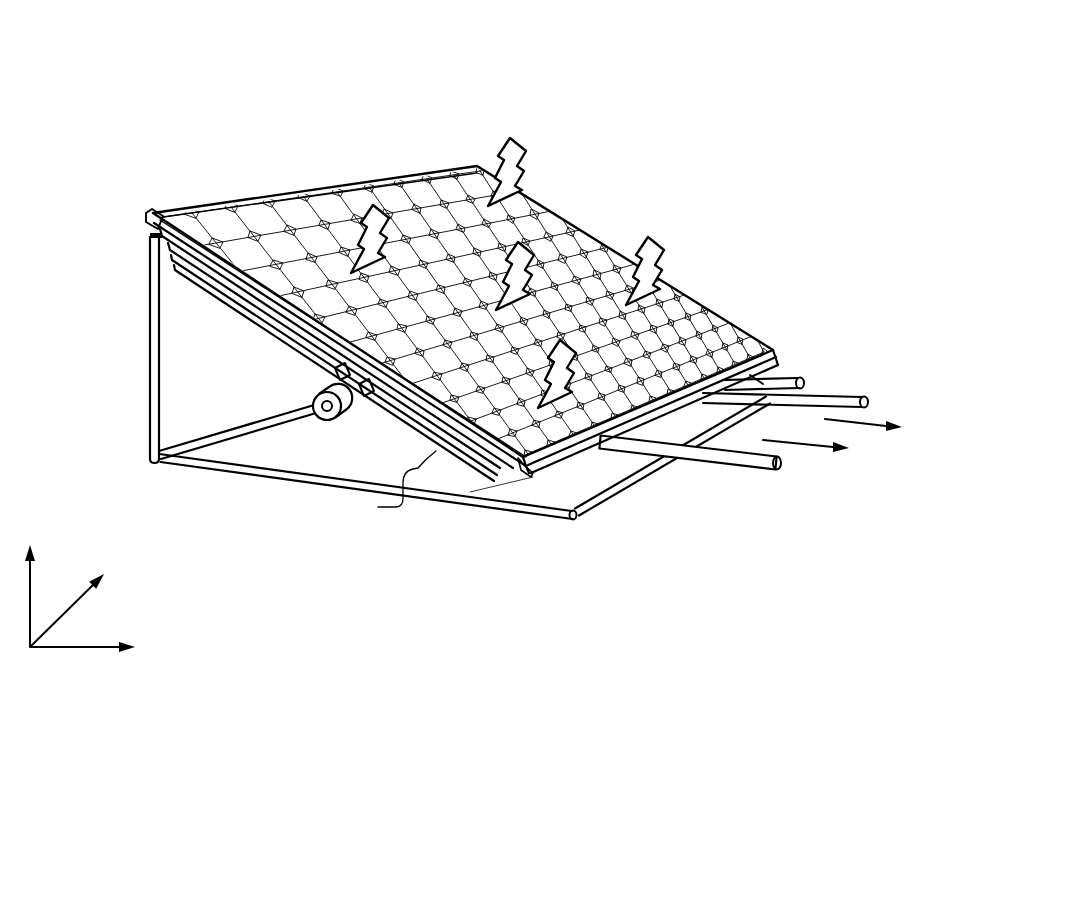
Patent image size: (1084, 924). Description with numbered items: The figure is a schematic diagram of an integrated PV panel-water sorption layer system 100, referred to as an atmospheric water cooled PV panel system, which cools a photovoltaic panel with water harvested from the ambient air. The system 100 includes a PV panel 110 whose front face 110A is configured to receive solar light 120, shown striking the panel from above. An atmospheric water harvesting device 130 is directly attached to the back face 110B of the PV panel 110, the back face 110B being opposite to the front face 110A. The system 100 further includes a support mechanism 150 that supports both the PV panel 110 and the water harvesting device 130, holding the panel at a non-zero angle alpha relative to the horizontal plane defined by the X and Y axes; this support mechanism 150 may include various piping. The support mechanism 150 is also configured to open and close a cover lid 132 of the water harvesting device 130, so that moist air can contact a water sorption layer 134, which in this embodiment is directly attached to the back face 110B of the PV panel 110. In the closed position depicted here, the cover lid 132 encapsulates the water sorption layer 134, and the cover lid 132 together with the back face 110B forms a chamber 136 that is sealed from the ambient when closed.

The integrated PV panel-water sorption layer system 100 is at (714, 50).
The PV panel 110 is at (688, 290).
The front face 110A is at (338, 193).
The back face 110B is at (158, 229).
The solar light 120 is at (521, 166).
The atmospheric water harvesting device 130 is at (303, 366).
The cover lid 132 is at (280, 343).
The water sorption layer 134 is at (257, 302).
The chamber 136 is at (207, 282).
The support mechanism 150 is at (136, 384).